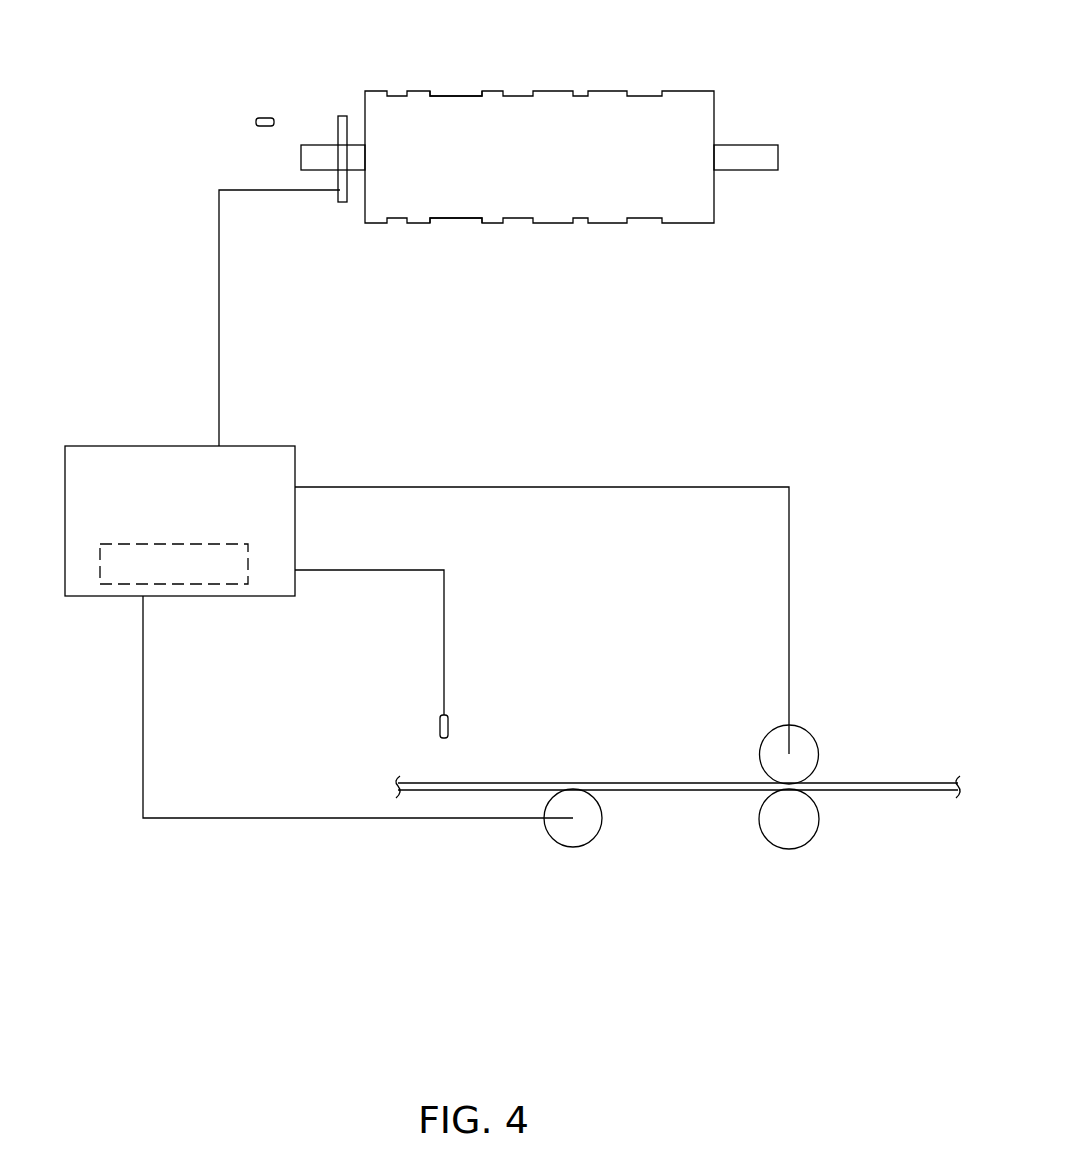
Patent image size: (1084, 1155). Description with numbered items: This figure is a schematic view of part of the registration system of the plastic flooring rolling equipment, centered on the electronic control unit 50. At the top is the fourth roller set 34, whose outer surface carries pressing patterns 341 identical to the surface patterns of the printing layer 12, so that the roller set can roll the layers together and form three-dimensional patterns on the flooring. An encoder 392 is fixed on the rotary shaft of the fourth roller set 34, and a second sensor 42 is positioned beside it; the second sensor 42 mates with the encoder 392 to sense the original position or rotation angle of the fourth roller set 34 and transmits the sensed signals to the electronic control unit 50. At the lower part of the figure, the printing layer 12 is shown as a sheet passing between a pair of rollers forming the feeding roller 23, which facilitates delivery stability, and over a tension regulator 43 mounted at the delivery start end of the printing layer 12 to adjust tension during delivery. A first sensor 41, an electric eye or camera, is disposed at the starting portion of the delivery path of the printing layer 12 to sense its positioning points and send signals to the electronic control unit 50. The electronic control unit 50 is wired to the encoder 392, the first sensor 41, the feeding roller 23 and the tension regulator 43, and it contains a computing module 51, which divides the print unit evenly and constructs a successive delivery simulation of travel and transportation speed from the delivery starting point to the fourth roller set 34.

The printing layer 12 is at (698, 786).
The feeding roller 23 is at (775, 748).
The fourth roller set 34 is at (607, 105).
The pressing patterns 341 is at (450, 95).
The encoder 392 is at (342, 118).
The first sensor 41 is at (437, 727).
The second sensor 42 is at (262, 116).
The tension regulator 43 is at (578, 833).
The electronic control unit 50 is at (123, 456).
The computing module 51 is at (93, 579).